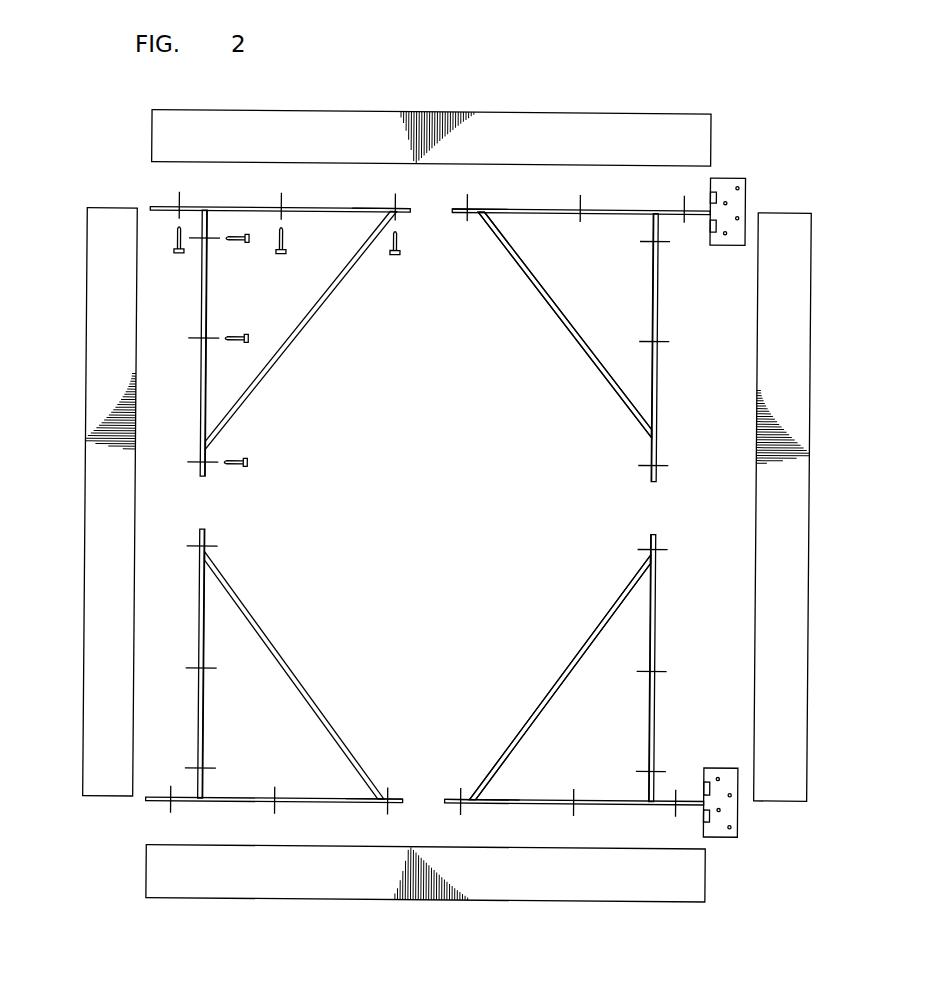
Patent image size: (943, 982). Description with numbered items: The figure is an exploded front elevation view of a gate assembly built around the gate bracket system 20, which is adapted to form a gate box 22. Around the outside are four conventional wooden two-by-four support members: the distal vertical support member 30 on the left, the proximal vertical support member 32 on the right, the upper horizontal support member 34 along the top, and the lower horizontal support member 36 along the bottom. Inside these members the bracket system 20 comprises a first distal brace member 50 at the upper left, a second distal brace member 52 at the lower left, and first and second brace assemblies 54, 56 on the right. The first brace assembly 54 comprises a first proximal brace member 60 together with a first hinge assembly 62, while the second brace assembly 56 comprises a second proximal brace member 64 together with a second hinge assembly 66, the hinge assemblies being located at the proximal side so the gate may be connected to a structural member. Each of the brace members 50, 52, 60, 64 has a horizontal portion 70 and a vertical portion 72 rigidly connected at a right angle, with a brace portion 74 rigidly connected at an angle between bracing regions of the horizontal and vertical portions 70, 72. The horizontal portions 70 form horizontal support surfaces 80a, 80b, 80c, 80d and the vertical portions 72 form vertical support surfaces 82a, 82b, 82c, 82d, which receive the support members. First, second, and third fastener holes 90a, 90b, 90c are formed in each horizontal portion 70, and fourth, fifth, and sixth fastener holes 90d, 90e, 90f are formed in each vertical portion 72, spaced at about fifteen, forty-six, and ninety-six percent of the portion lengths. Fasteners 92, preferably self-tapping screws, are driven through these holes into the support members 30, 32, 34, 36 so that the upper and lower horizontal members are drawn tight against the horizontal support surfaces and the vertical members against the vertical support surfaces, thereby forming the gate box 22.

The gate bracket system 20 is at (762, 186).
The gate box 22 is at (711, 87).
The distal vertical support member 30 is at (115, 345).
The proximal vertical support member 32 is at (792, 325).
The upper horizontal support member 34 is at (523, 127).
The lower horizontal support member 36 is at (298, 885).
The first distal brace member 50 is at (276, 321).
The second distal brace member 52 is at (271, 684).
The first brace assembly 54 is at (588, 324).
The second brace assembly 56 is at (592, 688).
The first proximal brace member 60 is at (557, 345).
The first hinge assembly 62 is at (731, 168).
The second proximal brace member 64 is at (548, 683).
The second hinge assembly 66 is at (730, 848).
The horizontal portion 70 is at (349, 207).
The vertical portion 72 is at (199, 386).
The brace portion 74 is at (251, 384).
The horizontal support surface of first distal brace member 80a is at (293, 207).
The horizontal support surface of second distal brace member 80b is at (240, 803).
The horizontal support surface of first proximal brace member 80c is at (562, 208).
The horizontal support surface of second proximal brace member 80d is at (597, 802).
The vertical support surface of first distal brace member 82a is at (199, 414).
The vertical support surface of second distal brace member 82b is at (199, 653).
The vertical support surface of first proximal brace member 82c is at (656, 387).
The vertical support surface of second proximal brace member 82d is at (656, 645).
The first fastener hole 90a is at (176, 197).
The second fastener hole 90b is at (279, 198).
The third fastener hole 90c is at (396, 222).
The fourth fastener hole 90d is at (190, 240).
The fifth fastener hole 90e is at (190, 342).
The sixth fastener hole 90f is at (193, 465).
The fastener 92 is at (177, 254).